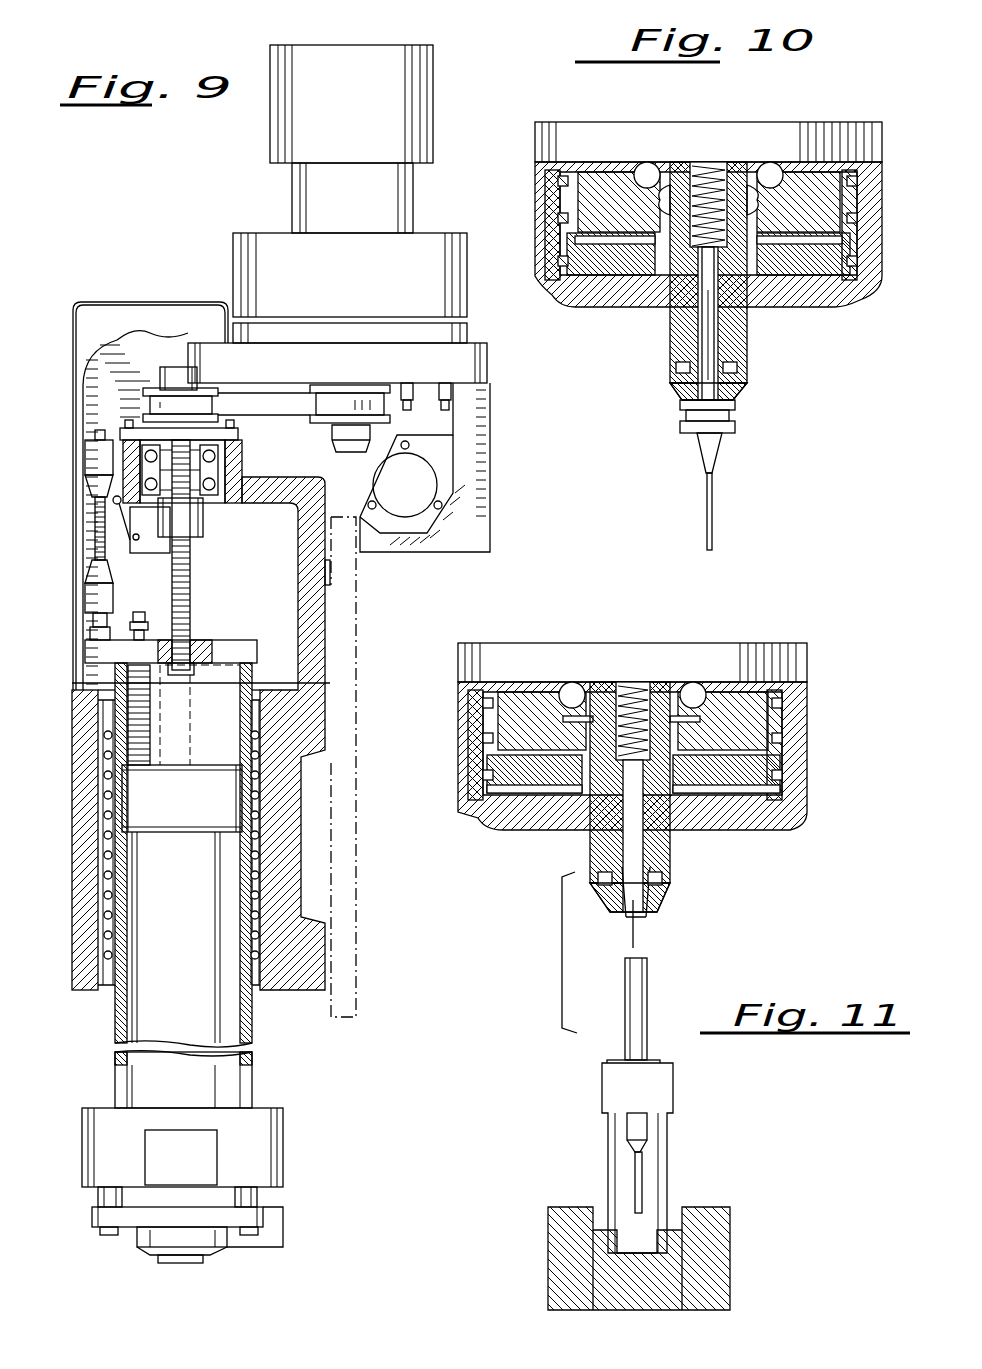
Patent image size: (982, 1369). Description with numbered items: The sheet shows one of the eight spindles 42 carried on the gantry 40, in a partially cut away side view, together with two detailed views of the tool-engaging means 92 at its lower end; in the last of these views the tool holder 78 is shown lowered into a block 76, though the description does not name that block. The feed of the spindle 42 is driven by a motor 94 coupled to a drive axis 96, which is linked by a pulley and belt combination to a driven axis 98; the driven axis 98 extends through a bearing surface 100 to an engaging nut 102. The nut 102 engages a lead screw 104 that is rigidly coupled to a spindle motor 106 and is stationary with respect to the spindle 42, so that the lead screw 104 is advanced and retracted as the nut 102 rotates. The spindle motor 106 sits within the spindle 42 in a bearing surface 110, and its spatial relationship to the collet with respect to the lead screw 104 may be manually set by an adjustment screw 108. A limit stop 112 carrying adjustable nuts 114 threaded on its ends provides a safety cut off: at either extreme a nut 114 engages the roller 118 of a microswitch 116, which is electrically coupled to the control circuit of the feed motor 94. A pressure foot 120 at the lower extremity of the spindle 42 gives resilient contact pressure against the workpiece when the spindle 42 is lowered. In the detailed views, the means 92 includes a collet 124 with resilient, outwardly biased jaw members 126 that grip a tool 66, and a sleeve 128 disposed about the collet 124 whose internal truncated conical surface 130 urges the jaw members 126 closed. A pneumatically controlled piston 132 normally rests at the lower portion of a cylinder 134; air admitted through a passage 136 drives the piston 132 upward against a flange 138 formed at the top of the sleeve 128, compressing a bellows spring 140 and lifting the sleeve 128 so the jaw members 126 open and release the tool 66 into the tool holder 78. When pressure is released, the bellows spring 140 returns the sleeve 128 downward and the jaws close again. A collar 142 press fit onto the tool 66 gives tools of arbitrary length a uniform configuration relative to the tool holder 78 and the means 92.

In FIG. 9, the gantry 40 is at (344, 977).
In FIG. 9, the spindle 42 is at (146, 231).
In FIG. 10, the spindle 42 is at (870, 237).
In FIG. 11, the spindle 42 is at (800, 782).
In FIG. 10, the tool 66 is at (713, 505).
In FIG. 11, the tool 66 is at (648, 998).
In FIG. 11, the holder block 76 is at (718, 1228).
In FIG. 11, the tool holder 78 is at (668, 1160).
In FIG. 10, the means for engaging the tool 92 is at (822, 362).
In FIG. 11, the means for engaging the tool 92 is at (748, 862).
In FIG. 9, the motor 94 is at (405, 212).
In FIG. 9, the drive axis 96 is at (350, 445).
In FIG. 9, the driven axis 98 is at (170, 376).
In FIG. 9, the bearing surface 100 is at (230, 460).
In FIG. 9, the engaging nut 102 is at (204, 524).
In FIG. 9, the lead screw 104 is at (190, 607).
In FIG. 9, the spindle motor 106 is at (222, 1012).
In FIG. 9, the adjustment screw 108 is at (151, 728).
In FIG. 9, the bearing surface 110 is at (252, 836).
In FIG. 9, the limit stop 112 is at (95, 534).
In FIG. 9, the adjustable nut 114 is at (86, 457).
In FIG. 9, the microswitch 116 is at (145, 540).
In FIG. 9, the roller 118 is at (112, 497).
In FIG. 9, the pressure foot 120 is at (263, 1222).
In FIG. 10, the collet 124 is at (742, 350).
In FIG. 11, the collet 124 is at (666, 862).
In FIG. 10, the jaw members 126 is at (738, 386).
In FIG. 11, the jaw members 126 is at (623, 920).
In FIG. 10, the sleeve 128 is at (668, 368).
In FIG. 11, the sleeve 128 is at (595, 865).
In FIG. 10, the internal truncated conical surface 130 is at (676, 390).
In FIG. 11, the internal truncated conical surface 130 is at (666, 900).
In FIG. 10, the piston 132 is at (592, 268).
In FIG. 11, the piston 132 is at (487, 790).
In FIG. 10, the cylinder 134 is at (560, 230).
In FIG. 11, the cylinder 134 is at (502, 800).
In FIG. 10, the passage 136 is at (545, 162).
In FIG. 11, the passage 136 is at (470, 683).
In FIG. 10, the flange 138 is at (647, 165).
In FIG. 11, the flange 138 is at (575, 690).
In FIG. 10, the bellows spring 140 is at (770, 165).
In FIG. 11, the bellows spring 140 is at (693, 685).
In FIG. 10, the collar 142 is at (736, 417).
In FIG. 11, the collar 142 is at (658, 1065).